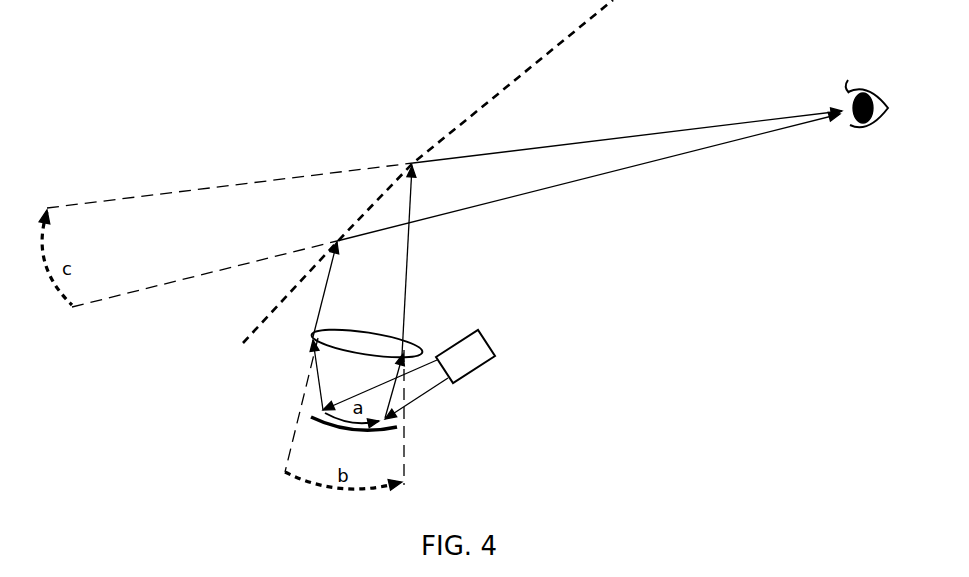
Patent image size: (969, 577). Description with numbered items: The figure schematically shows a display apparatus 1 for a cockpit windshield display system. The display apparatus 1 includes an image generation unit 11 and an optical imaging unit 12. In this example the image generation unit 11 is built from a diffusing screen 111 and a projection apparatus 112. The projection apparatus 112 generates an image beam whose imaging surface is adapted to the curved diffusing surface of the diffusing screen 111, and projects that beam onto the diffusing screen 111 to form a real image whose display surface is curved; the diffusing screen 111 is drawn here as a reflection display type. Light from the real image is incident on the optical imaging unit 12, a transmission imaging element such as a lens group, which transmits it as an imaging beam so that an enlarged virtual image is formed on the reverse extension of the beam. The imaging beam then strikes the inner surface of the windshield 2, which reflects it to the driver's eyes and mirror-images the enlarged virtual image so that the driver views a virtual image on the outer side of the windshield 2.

The display apparatus 1 is at (563, 290).
The windshield 2 is at (460, 125).
The image generation unit 11 is at (563, 347).
The optical imaging unit 12 is at (418, 348).
The diffusing screen 111 is at (398, 426).
The projection apparatus 112 is at (486, 349).